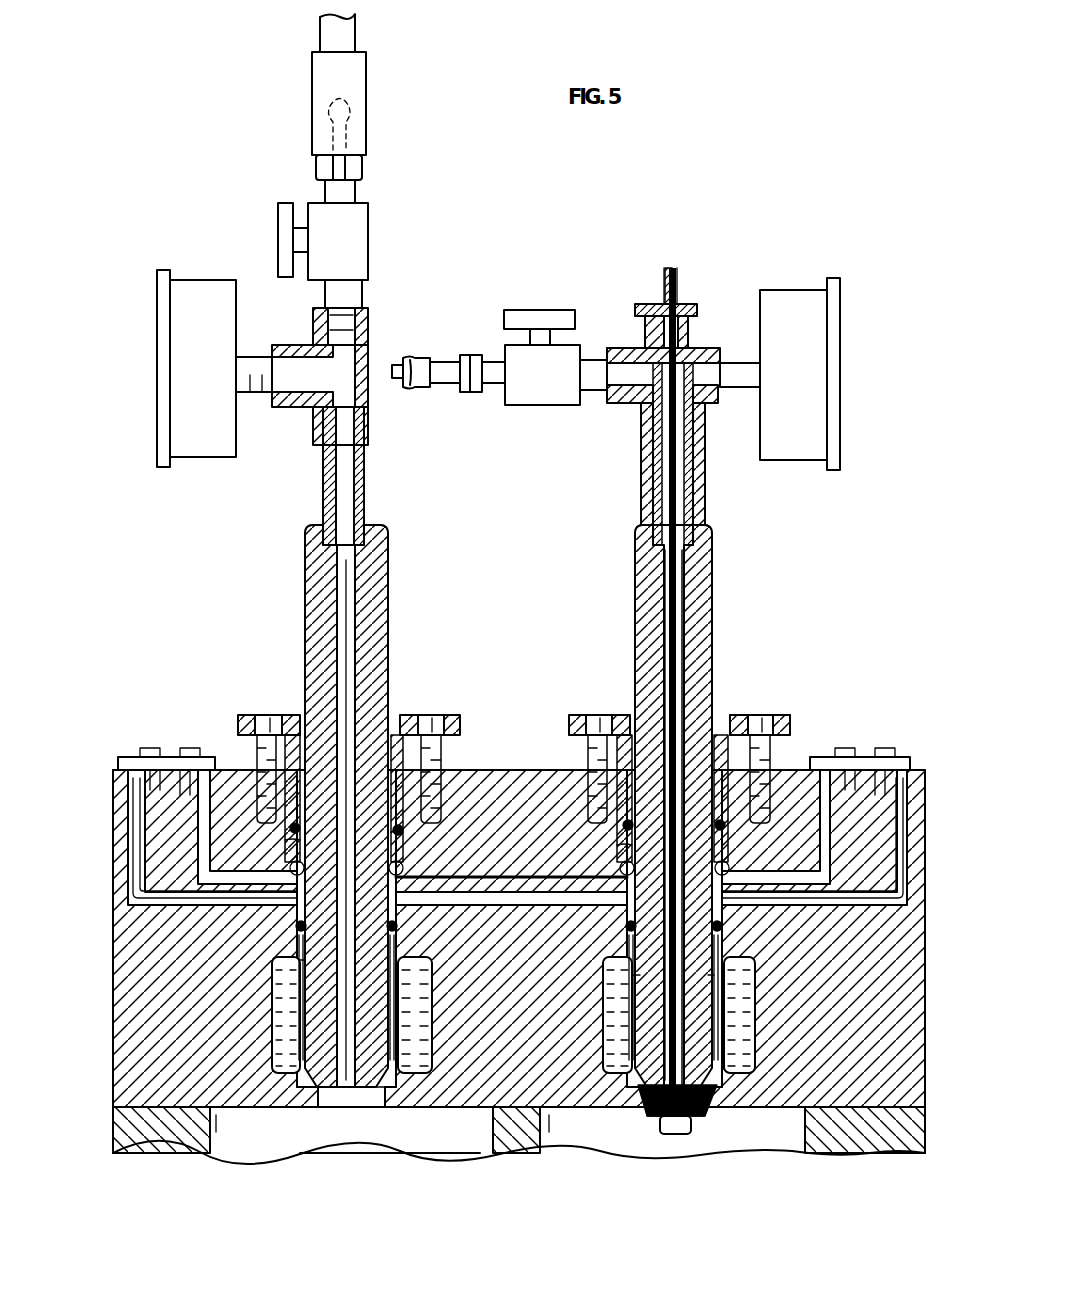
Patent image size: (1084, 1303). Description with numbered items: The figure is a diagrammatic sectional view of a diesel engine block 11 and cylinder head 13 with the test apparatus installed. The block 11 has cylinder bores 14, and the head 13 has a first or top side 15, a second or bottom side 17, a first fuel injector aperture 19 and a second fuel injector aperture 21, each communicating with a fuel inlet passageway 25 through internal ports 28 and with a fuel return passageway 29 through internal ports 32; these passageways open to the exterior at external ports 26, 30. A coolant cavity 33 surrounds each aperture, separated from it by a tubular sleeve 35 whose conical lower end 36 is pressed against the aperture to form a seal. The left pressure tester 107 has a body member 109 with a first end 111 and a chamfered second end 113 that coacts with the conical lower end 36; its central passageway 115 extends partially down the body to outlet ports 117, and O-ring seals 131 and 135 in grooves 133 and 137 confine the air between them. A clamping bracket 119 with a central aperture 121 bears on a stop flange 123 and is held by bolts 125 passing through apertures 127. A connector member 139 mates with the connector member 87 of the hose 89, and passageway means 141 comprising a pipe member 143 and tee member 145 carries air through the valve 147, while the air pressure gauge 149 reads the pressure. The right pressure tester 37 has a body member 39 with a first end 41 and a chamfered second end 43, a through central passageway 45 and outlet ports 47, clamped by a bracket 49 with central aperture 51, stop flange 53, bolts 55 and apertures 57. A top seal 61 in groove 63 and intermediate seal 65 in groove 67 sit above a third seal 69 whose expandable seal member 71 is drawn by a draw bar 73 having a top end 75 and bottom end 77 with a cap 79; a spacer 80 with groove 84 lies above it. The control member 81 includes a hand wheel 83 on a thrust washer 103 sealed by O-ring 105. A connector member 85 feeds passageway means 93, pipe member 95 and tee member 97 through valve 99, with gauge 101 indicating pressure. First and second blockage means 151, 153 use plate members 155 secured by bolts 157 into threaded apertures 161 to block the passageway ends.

The engine block 11 is at (512, 1153).
The cylinder head 13 is at (566, 1110).
The cylinder bore 14 is at (218, 1153).
The first or top side 15 is at (535, 870).
The second or bottom side 17 is at (445, 1140).
The first fuel injector aperture 19 is at (380, 715).
The second fuel injector aperture 21 is at (716, 735).
The fuel inlet passageway 25 is at (490, 810).
The external port 26 is at (225, 778).
The internal port 28 is at (290, 870).
The fuel return passageway 29 is at (497, 746).
The external port 30 is at (122, 770).
The internal port 32 is at (296, 928).
The coolant passageway or cavity 33 is at (280, 1030).
The tubular sleeve 35 is at (292, 1055).
The conical lower end 36 is at (298, 1090).
The pressure tester 37 is at (782, 342).
The body member 39 is at (702, 604).
The first or top end 41 is at (708, 525).
The second or bottom end 43 is at (712, 1090).
The central passageway 45 is at (680, 645).
The outlet port 47 is at (640, 975).
The clamping bracket 49 is at (788, 742).
The central aperture 51 is at (640, 735).
The stop flange 53 is at (714, 745).
The bolt 55 is at (592, 715).
The aperture 57 is at (768, 730).
The first or top seal 61 is at (726, 826).
The groove 63 is at (620, 845).
The second or intermediate seal 65 is at (630, 948).
The groove 67 is at (718, 945).
The third or bottom seal 69 is at (688, 1134).
The expandable seal member 71 is at (660, 1116).
The draw bar 73 is at (668, 568).
The first or top end 75 is at (665, 272).
The second or bottom end 77 is at (668, 1116).
The enlarged head or cap 79 is at (678, 1116).
The washer-like spacer 80 is at (650, 1116).
The control member 81 is at (700, 305).
The hand wheel 83 is at (640, 304).
The groove 84 is at (700, 1116).
The connector member 85 is at (432, 380).
The connector member 87 is at (357, 83).
The hose 89 is at (348, 41).
The passageway means 93 is at (658, 395).
The pipe member 95 is at (652, 492).
The hollow tee member 97 is at (622, 402).
The valve 99 is at (540, 405).
The air pressure gauge 101 is at (795, 292).
The thrust washer 103 is at (646, 332).
The O-ring 105 is at (688, 338).
The pressure tester 107 is at (291, 147).
The body member 109 is at (308, 608).
The first or top end 111 is at (305, 530).
The second or bottom end 113 is at (352, 1107).
The central passageway 115 is at (352, 610).
The outlet port 117 is at (305, 960).
The clamping bracket 119 is at (246, 701).
The central aperture 121 is at (302, 735).
The stop flange 123 is at (392, 745).
The bolt 125 is at (258, 715).
The aperture 127 is at (248, 740).
The first or top seal 131 is at (412, 832).
The groove 133 is at (300, 840).
The second or bottom seal 135 is at (398, 952).
The groove 137 is at (298, 945).
The connector member 139 is at (350, 138).
The passageway means 141 is at (350, 353).
The pipe member 143 is at (364, 487).
The hollow tee member 145 is at (368, 340).
The valve 147 is at (366, 233).
The air pressure gauge 149 is at (205, 292).
The first blockage means 151 is at (130, 704).
The second blockage means 153 is at (892, 697).
The plate member 155 is at (188, 757).
The bolt 157 is at (152, 748).
The threaded aperture 161 is at (175, 778).